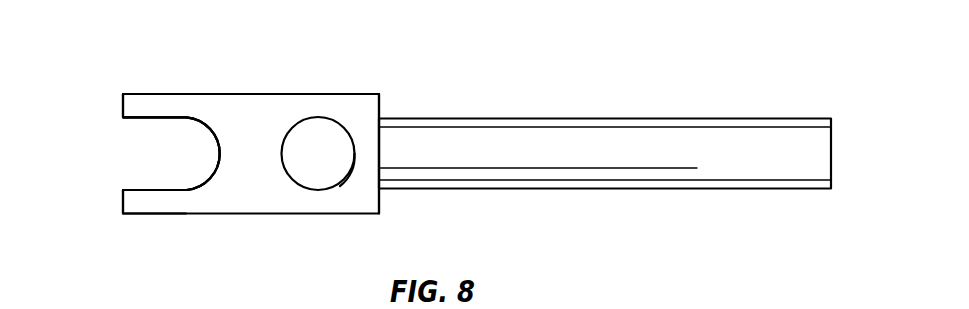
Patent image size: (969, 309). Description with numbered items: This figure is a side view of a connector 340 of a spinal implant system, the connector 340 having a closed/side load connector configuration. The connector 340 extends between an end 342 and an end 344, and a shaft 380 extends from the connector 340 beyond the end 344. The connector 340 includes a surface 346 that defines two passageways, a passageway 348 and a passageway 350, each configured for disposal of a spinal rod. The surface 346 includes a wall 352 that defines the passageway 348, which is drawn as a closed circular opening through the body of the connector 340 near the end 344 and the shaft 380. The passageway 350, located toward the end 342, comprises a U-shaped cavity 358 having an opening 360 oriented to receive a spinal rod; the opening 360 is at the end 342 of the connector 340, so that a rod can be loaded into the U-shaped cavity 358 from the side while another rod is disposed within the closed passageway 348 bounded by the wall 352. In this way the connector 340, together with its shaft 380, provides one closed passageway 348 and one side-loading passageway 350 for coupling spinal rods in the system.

The connector 340 is at (368, 92).
The end 342 is at (123, 103).
The end 344 is at (382, 108).
The surface 346 is at (295, 93).
The passageway 348 is at (321, 140).
The passageway 350 is at (182, 147).
The wall 352 is at (350, 170).
The U-shaped cavity 358 is at (197, 147).
The opening 360 is at (150, 157).
The shaft 380 is at (696, 130).